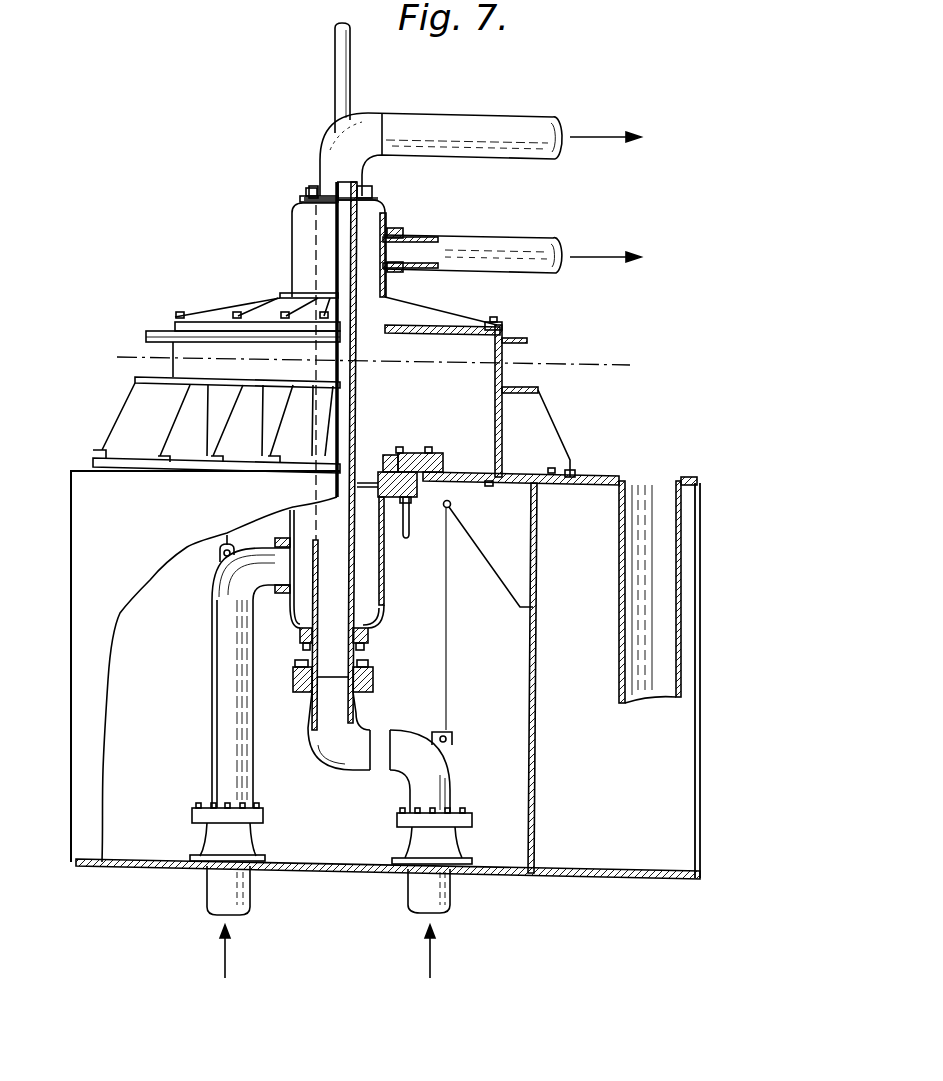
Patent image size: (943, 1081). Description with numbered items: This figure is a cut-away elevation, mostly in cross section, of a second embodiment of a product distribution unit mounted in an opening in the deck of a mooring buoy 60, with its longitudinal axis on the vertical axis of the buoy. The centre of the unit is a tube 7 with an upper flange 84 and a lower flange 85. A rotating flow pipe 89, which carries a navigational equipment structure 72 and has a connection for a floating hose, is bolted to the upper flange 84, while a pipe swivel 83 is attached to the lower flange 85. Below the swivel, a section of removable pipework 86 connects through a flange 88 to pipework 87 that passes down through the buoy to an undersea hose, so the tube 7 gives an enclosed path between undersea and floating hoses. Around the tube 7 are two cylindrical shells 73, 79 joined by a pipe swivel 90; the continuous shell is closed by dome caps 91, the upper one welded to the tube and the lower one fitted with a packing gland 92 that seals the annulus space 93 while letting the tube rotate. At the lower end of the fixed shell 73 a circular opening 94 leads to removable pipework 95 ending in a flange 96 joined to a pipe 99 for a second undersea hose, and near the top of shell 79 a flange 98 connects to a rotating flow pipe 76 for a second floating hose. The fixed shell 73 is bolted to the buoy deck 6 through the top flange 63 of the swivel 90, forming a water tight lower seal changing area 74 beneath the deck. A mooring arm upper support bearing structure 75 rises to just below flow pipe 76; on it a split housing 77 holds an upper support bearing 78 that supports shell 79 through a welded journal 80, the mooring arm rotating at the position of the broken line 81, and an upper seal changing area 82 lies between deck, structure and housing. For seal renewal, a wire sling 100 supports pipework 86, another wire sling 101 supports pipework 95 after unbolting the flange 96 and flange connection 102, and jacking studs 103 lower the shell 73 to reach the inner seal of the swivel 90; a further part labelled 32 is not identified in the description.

The buoy deck 6 is at (595, 473).
The tube 7 is at (372, 378).
The bolts 32 is at (365, 650).
The mooring buoy 60 is at (657, 478).
The top flange 63 is at (398, 455).
The navigational equipment structure 72 is at (334, 80).
The cylindrical shell 73 is at (385, 597).
The lower seal changing area 74 is at (205, 666).
The mooring arm upper support bearing structure 75 is at (145, 400).
The rotating flow pipe 76 is at (530, 247).
The split housing 77 is at (228, 305).
The upper support bearing 78 is at (278, 293).
The cylindrical shell 79 is at (303, 232).
The journal 80 is at (395, 335).
The broken line 81 is at (600, 364).
The upper seal changing area 82 is at (505, 378).
The pipe swivel 83 is at (373, 690).
The upper flange 84 is at (368, 193).
The lower flange 85 is at (293, 667).
The removable pipework 86 is at (430, 773).
The pipework 87 is at (452, 891).
The flange 88 is at (470, 820).
The flow pipe 89 is at (462, 121).
The pipe swivel 90 is at (424, 449).
The dome caps 91 is at (300, 200).
The packing gland 92 is at (368, 636).
The annulus space 93 is at (370, 555).
The circular opening 94 is at (240, 578).
The removable pipework 95 is at (215, 745).
The flange 96 is at (263, 812).
The flange 98 is at (395, 232).
The pipe 99 is at (252, 892).
The wire sling 100 is at (455, 625).
The wire sling 101 is at (227, 535).
The flange connection 102 is at (283, 530).
The jacking studs 103 is at (410, 530).